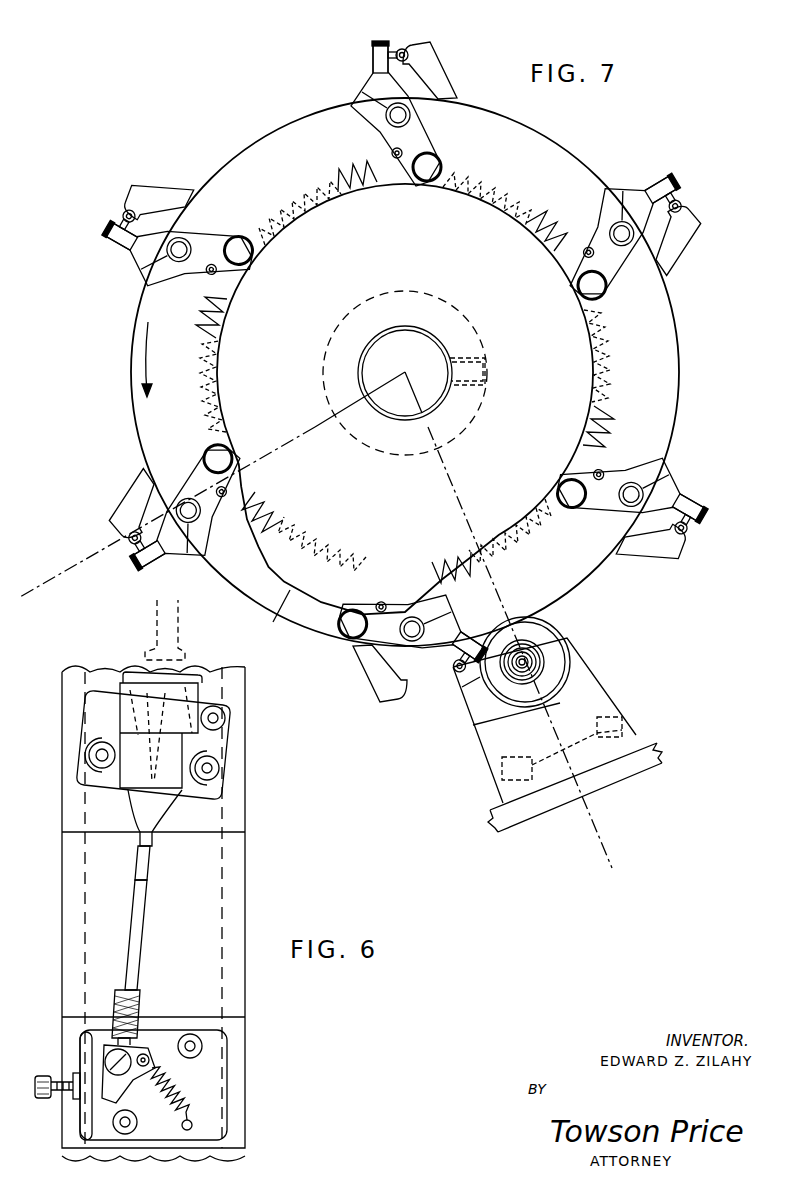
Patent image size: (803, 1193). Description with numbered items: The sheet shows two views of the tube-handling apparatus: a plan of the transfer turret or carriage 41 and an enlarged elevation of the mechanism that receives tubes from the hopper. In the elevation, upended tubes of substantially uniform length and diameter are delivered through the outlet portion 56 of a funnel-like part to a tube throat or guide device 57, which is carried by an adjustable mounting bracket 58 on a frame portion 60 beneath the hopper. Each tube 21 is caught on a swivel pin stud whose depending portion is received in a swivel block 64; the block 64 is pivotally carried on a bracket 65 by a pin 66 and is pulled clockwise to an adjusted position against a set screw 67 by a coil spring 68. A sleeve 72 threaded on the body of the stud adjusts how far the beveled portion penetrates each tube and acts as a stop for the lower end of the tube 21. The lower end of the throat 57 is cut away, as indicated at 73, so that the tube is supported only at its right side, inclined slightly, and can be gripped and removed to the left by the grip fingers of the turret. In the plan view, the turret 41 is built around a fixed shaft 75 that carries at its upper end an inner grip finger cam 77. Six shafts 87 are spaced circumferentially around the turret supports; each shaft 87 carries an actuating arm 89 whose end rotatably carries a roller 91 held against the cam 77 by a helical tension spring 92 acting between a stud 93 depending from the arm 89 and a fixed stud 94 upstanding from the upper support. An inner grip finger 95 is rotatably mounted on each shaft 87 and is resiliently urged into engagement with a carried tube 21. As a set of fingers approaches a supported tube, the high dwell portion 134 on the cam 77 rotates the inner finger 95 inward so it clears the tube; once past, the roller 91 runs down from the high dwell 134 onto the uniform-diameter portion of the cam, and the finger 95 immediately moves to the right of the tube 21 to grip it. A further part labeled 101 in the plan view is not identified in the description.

In FIG. 7, the tube 21 is at (406, 50).
In FIG. 6, the tube 21 is at (146, 940).
In FIG. 7, the transfer turret 41 is at (680, 391).
In FIG. 6, the outlet portion 56 is at (182, 646).
In FIG. 7, the tube throat 57 is at (552, 648).
In FIG. 6, the tube throat 57 is at (152, 832).
In FIG. 7, the adjustable mounting bracket 58 is at (590, 682).
In FIG. 6, the adjustable mounting bracket 58 is at (232, 760).
In FIG. 7, the frame portion 60 is at (640, 772).
In FIG. 6, the frame portion 60 is at (246, 905).
In FIG. 6, the swivel block 64 is at (130, 1112).
In FIG. 6, the bracket 65 is at (230, 1082).
In FIG. 6, the pin 66 is at (136, 1052).
In FIG. 6, the set screw 67 is at (45, 1074).
In FIG. 6, the coil spring 68 is at (182, 1094).
In FIG. 6, the sleeve 72 is at (138, 1002).
In FIG. 6, the cut away 73 is at (138, 878).
In FIG. 7, the shaft 75 is at (398, 325).
In FIG. 7, the inner grip finger cam 77 is at (275, 587).
In FIG. 7, the shaft 87 is at (183, 262).
In FIG. 7, the actuating arm 89 is at (422, 112).
In FIG. 7, the roller 91 is at (432, 168).
In FIG. 7, the helical tension spring 92 is at (345, 192).
In FIG. 7, the stud 93 is at (392, 153).
In FIG. 7, the fixed stud 94 is at (436, 196).
In FIG. 7, the inner grip finger 95 is at (374, 58).
In FIG. 7, the hook bracket 101 is at (442, 72).
In FIG. 7, the high dwell portion 134 is at (279, 619).